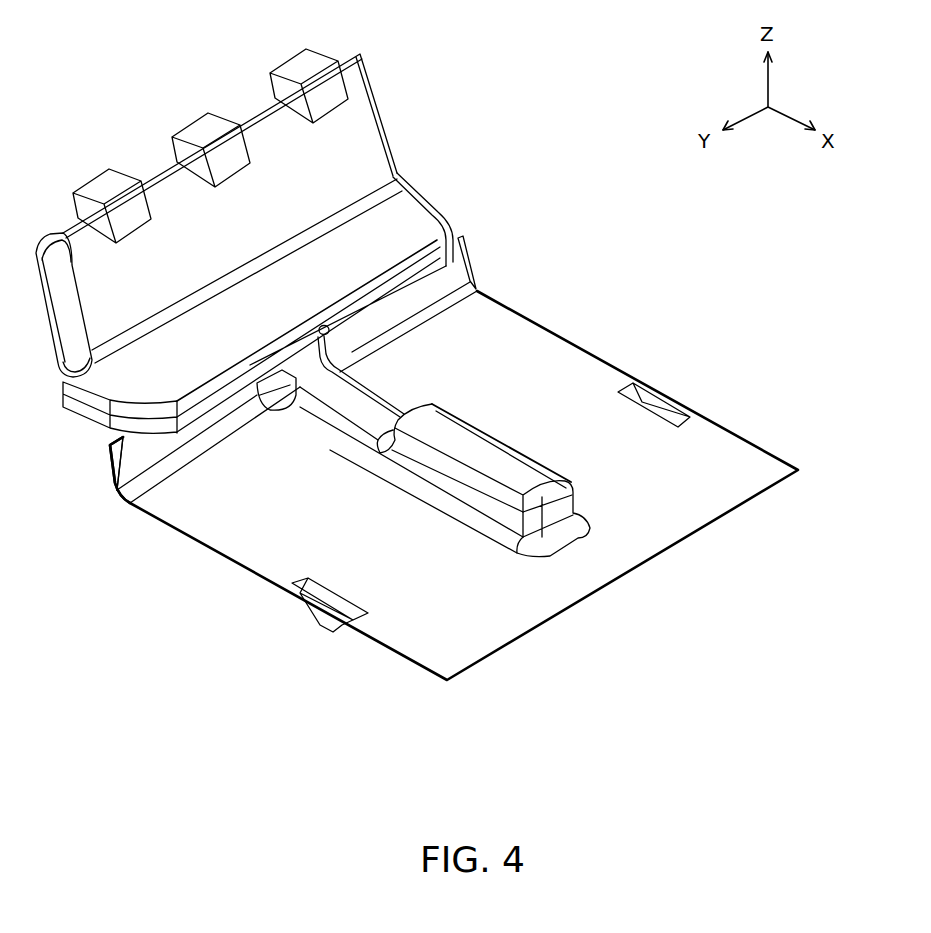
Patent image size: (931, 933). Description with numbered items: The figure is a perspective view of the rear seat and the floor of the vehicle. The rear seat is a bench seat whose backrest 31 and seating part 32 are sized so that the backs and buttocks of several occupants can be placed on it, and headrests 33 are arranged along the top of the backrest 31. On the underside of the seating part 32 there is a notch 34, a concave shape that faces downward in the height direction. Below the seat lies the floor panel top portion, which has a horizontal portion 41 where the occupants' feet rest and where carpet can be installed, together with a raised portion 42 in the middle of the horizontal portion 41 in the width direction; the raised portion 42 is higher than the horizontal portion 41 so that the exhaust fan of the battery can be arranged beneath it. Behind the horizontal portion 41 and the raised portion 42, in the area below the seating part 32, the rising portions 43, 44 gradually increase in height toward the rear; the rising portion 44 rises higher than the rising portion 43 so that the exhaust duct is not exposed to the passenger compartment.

The backrest 31 is at (347, 147).
The seating part 32 is at (390, 242).
The headrests 33 is at (327, 92).
The notch 34 is at (330, 331).
The horizontal portion 41 is at (293, 572).
The raised portion 42 is at (357, 405).
The rising portion 43 is at (133, 453).
The rising portion 44 is at (262, 408).